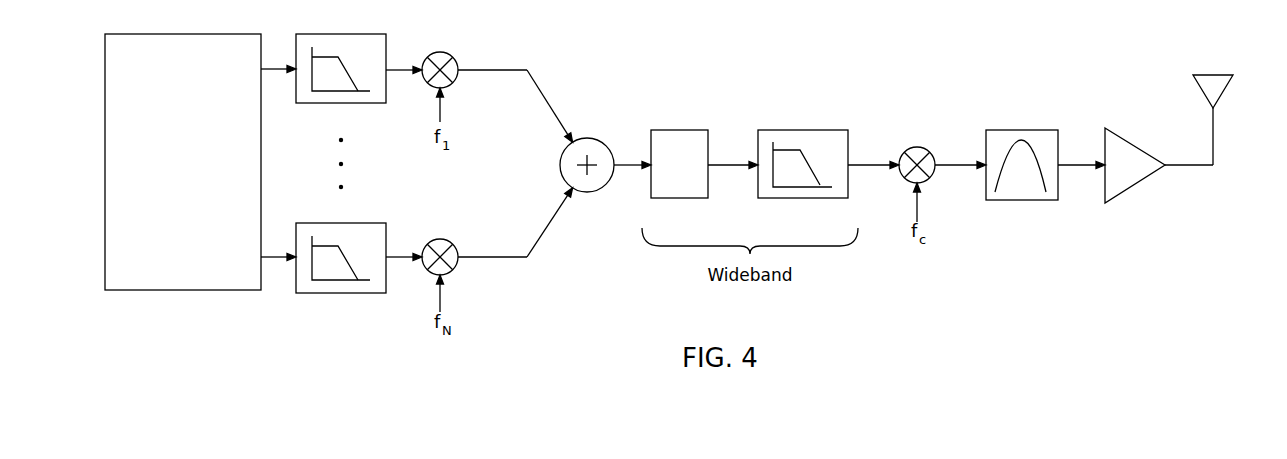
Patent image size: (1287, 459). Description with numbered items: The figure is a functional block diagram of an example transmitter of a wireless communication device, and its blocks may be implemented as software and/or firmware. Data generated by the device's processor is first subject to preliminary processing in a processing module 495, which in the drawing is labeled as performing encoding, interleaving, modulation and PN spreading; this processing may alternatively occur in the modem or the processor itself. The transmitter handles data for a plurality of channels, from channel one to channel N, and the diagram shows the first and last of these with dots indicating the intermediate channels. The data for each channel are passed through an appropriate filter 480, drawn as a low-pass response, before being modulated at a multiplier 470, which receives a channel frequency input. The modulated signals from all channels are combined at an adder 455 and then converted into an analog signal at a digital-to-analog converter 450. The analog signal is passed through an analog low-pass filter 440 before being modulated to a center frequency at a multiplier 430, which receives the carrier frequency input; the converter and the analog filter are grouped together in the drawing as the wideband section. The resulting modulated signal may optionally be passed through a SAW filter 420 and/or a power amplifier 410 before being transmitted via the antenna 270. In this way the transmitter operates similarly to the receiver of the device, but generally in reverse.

The processing module 495 is at (195, 34).
The filter 480 is at (335, 34).
The multiplier 470 is at (443, 51).
The adder 455 is at (593, 138).
The digital-to-analog converter 450 is at (680, 198).
The analog low-pass filter 440 is at (797, 198).
The multiplier 430 is at (917, 147).
The SAW filter 420 is at (1017, 200).
The power amplifier 410 is at (1130, 186).
The antenna 270 is at (1215, 125).